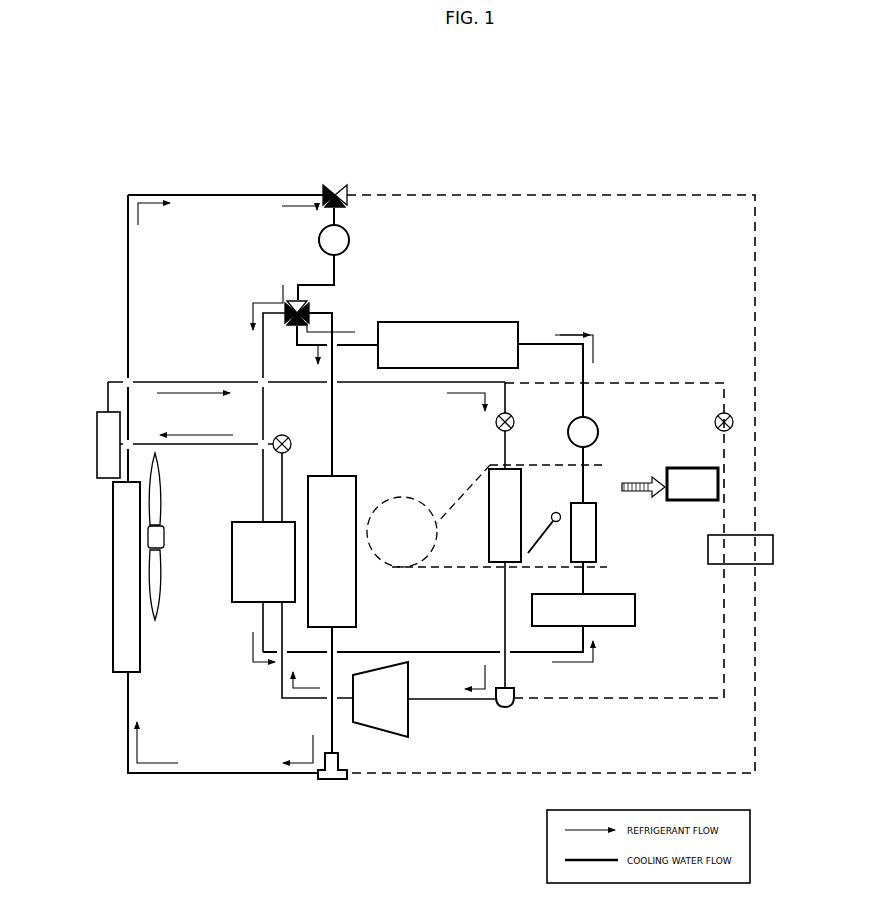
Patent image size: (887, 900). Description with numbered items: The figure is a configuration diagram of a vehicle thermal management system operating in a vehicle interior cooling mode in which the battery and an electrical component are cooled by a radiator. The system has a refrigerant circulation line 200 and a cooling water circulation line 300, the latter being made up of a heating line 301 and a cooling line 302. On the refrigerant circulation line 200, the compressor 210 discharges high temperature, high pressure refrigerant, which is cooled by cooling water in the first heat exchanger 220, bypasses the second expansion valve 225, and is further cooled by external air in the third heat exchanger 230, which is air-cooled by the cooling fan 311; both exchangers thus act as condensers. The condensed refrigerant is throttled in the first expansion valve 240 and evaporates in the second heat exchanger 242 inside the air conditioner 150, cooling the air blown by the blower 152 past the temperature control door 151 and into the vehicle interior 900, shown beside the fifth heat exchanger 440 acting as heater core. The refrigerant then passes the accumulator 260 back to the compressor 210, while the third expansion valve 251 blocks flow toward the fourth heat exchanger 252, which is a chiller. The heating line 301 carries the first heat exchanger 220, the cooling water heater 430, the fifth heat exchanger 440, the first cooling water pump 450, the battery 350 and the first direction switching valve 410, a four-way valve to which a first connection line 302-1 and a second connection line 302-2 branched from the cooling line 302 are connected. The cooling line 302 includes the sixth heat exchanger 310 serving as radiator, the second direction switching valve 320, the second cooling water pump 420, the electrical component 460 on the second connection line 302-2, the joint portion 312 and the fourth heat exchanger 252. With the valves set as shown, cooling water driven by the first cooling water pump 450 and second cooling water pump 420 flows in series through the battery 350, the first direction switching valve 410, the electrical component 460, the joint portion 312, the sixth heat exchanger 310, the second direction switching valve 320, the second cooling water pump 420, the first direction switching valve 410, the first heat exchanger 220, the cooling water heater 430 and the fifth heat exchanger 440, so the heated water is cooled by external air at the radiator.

The air conditioner 150 is at (465, 493).
The temperature control door 151 is at (537, 523).
The blower 152 is at (402, 497).
The refrigerant circulation line 200 is at (185, 382).
The compressor 210 is at (410, 718).
The first heat exchanger 220 is at (250, 522).
The second expansion valve 225 is at (282, 437).
The third heat exchanger 230 is at (97, 445).
The first expansion valve 240 is at (514, 417).
The second heat exchanger 242 is at (487, 547).
The third expansion valve 251 is at (735, 420).
The fourth heat exchanger 252 is at (774, 548).
The accumulator 260 is at (515, 702).
The cooling water circulation line 300 is at (603, 123).
The heating line 301 is at (548, 340).
The cooling line 302 is at (635, 194).
The first connection line 302-1 is at (335, 278).
The second connection line 302-2 is at (333, 423).
The sixth heat exchanger 310 is at (113, 608).
The cooling fan 311 is at (158, 617).
The joint portion 312 is at (327, 785).
The second direction switching valve 320 is at (340, 188).
The battery 350 is at (510, 322).
The first direction switching valve 410 is at (303, 300).
The second cooling water pump 420 is at (352, 238).
The cooling water heater 430 is at (636, 608).
The fifth heat exchanger 440 is at (597, 545).
The first cooling water pump 450 is at (600, 431).
The electrical component 460 is at (357, 608).
The vehicle interior 900 is at (670, 495).